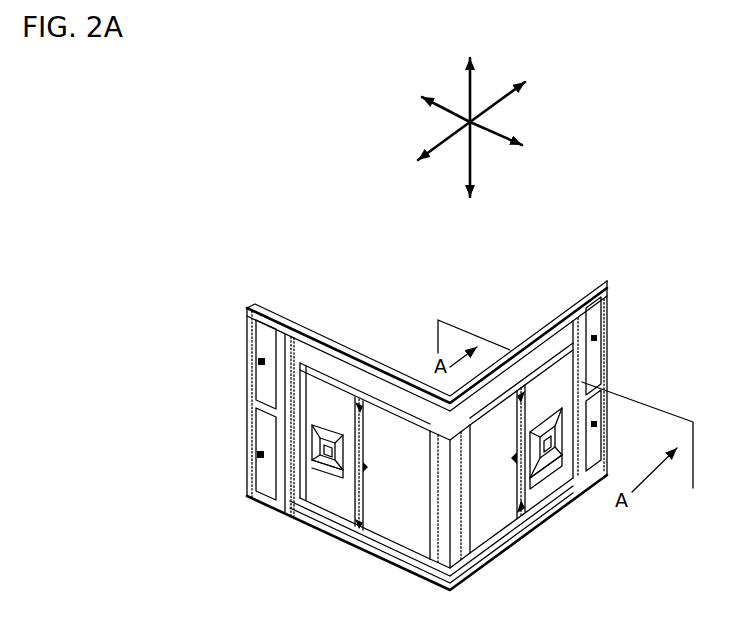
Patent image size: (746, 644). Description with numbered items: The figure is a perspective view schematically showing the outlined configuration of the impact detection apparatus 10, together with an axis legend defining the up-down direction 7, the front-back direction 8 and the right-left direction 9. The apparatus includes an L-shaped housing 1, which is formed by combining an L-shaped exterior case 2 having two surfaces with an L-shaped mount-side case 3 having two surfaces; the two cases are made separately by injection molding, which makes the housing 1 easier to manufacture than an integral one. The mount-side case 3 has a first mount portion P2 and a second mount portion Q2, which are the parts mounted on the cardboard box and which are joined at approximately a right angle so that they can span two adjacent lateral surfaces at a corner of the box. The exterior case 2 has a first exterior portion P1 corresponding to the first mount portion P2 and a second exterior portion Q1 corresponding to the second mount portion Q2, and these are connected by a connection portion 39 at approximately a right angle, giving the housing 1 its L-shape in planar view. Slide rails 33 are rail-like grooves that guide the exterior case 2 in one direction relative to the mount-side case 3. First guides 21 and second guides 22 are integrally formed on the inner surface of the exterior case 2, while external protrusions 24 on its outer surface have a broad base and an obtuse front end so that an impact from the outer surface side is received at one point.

The housing 1 is at (207, 237).
The exterior case 2 is at (232, 379).
The mount-side case 3 is at (330, 311).
The up-down direction 7 is at (472, 101).
The front-back direction 8 is at (457, 118).
The right-left direction 9 is at (456, 141).
The impact detection apparatus 10 is at (309, 229).
The first guides 21 is at (421, 573).
The second guides 22 is at (355, 508).
The external protrusions 24 is at (313, 473).
The slide rails 33 is at (258, 413).
The connection portion 39 is at (458, 523).
The first exterior portion P1 is at (527, 532).
The first mount portion P2 is at (540, 335).
The second exterior portion Q1 is at (375, 555).
The second mount portion Q2 is at (391, 373).